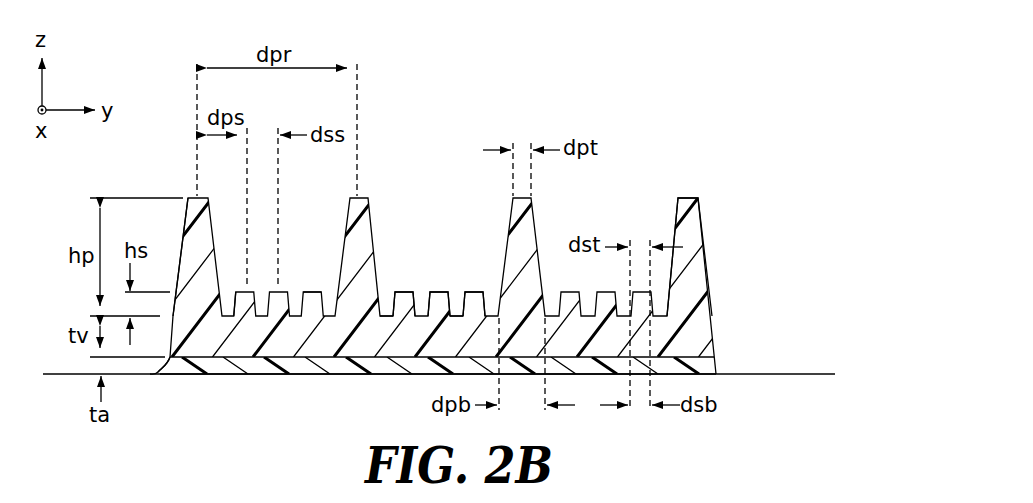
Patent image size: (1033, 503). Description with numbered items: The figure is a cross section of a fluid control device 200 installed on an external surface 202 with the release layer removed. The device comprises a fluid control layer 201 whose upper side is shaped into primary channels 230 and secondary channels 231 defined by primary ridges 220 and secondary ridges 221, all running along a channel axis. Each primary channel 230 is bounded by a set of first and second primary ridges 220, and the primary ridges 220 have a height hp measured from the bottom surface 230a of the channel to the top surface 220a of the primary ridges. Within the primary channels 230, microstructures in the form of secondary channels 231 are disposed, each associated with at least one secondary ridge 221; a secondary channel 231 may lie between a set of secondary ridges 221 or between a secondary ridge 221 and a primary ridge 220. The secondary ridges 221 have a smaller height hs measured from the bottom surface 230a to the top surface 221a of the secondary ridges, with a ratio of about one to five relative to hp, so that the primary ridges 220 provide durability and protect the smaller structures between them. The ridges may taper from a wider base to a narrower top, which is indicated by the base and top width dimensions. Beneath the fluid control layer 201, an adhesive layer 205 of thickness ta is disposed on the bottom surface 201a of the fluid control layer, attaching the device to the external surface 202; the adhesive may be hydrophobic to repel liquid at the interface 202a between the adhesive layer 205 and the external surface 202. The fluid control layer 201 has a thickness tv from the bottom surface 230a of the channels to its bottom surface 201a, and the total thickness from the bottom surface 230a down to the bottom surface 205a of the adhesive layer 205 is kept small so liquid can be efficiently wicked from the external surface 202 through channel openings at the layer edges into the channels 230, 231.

The fluid control device 200 is at (651, 98).
The fluid control layer 201 is at (695, 278).
The bottom surface of the fluid control layer 201a is at (227, 358).
The external surface 202 is at (820, 373).
The interface 202a is at (163, 375).
The adhesive layer 205 is at (700, 366).
The bottom surface of the adhesive layer 205a is at (305, 375).
The primary ridges 220 is at (692, 189).
The top surface of the primary ridges 220a is at (197, 197).
The secondary ridges 221 is at (386, 305).
The top surface of the secondary ridges 221a is at (310, 291).
The primary channels 230 is at (426, 196).
The bottom surface of the channel 230a is at (229, 290).
The secondary channels 231 is at (454, 292).